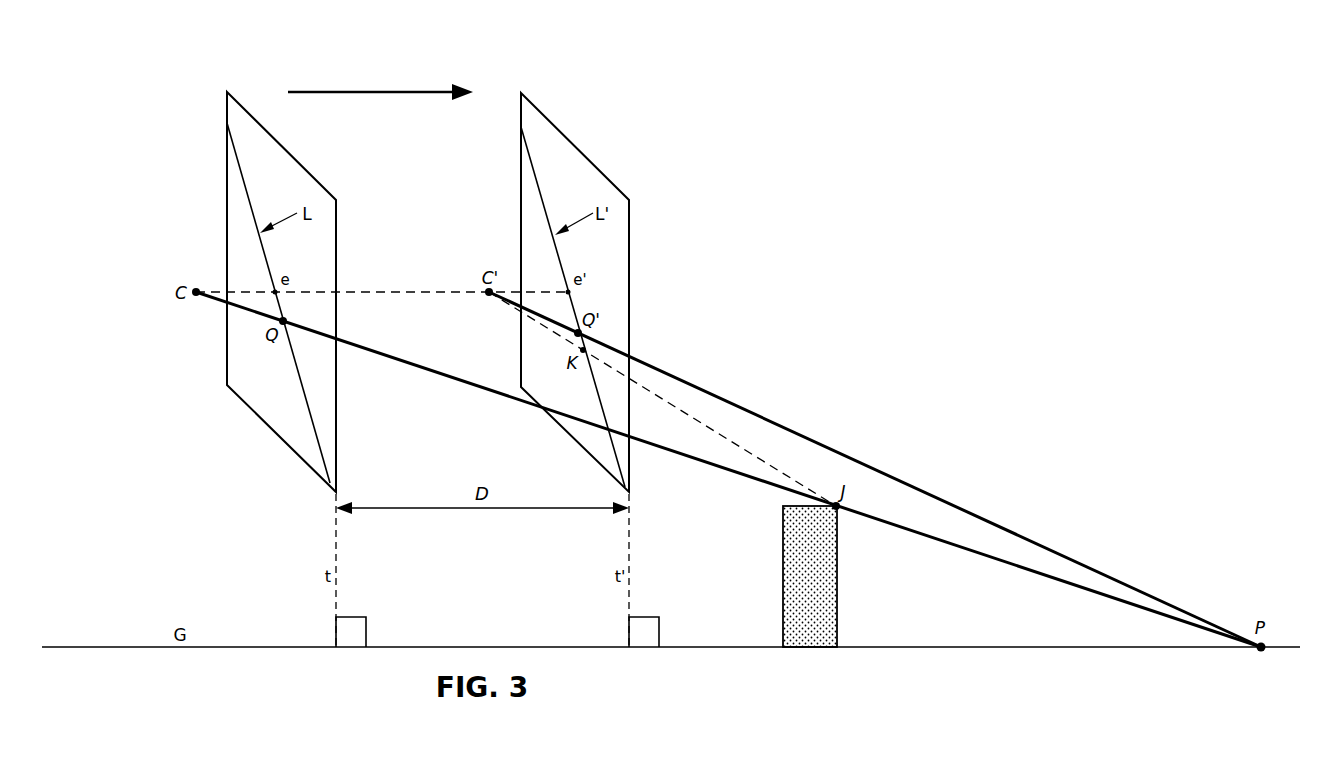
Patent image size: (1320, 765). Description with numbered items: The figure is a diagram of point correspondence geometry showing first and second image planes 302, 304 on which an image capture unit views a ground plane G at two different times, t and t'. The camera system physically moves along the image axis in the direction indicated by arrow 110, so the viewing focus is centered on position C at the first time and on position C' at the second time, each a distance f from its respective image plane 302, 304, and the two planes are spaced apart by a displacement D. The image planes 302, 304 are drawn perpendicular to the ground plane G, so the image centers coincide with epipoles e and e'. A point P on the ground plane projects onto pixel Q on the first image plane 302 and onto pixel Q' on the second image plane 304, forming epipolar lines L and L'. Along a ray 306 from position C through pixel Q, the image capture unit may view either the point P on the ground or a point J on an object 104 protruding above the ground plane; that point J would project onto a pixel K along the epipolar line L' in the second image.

The arrow 110 is at (382, 90).
The first image plane 302 is at (227, 240).
The second image plane 304 is at (575, 148).
The ray 306 is at (450, 377).
The object 104 is at (838, 575).